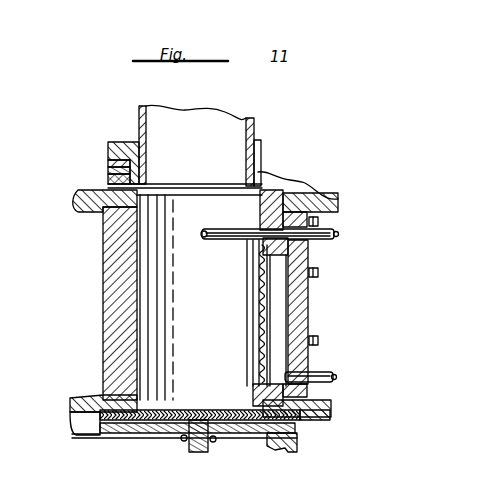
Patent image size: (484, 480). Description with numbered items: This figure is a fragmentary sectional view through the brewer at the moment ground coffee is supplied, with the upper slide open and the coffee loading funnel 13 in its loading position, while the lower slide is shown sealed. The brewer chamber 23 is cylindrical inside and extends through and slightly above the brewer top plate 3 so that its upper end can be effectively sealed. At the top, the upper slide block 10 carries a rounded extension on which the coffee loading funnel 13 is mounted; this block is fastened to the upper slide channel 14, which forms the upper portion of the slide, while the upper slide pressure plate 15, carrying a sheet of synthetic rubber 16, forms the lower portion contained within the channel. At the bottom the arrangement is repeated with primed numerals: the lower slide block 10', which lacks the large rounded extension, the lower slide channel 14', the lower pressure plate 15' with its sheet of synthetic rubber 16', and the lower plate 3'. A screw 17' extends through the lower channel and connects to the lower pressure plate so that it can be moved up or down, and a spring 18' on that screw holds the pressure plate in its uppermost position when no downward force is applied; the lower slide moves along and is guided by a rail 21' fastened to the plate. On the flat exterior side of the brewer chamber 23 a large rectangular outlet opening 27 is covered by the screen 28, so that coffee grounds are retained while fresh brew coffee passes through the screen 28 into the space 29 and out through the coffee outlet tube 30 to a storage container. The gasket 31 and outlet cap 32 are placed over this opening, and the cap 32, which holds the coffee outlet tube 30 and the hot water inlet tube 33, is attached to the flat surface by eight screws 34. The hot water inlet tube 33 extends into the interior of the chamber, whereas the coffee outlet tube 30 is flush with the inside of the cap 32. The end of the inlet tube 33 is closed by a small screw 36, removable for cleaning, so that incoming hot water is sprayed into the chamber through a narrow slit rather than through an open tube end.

The brewer top plate 3 is at (97, 208).
The brewer bottom plate 3' is at (75, 391).
The upper slide block 10 is at (122, 147).
The lower slide block 10' is at (304, 443).
The coffee loading funnel 13 is at (254, 135).
The upper slide channel 14 is at (95, 153).
The lower slide channel 14' is at (164, 432).
The upper slide pressure plate 15 is at (89, 171).
The lower slide pressure plate 15' is at (67, 417).
The sheet of synthetic rubber 16 is at (83, 186).
The sheet of synthetic rubber 16' is at (215, 401).
The screw 17' is at (179, 447).
The spring 18' is at (209, 454).
The rail 21' is at (184, 448).
The brewer chamber 23 is at (103, 314).
The outlet opening 27 is at (250, 342).
The screen 28 is at (262, 292).
The space 29 is at (280, 345).
The coffee outlet tube 30 is at (330, 372).
The gasket 31 is at (283, 252).
The outlet cap 32 is at (308, 304).
The hot water inlet tube 33 is at (338, 234).
The screws 34 is at (318, 222).
The small screw 36 is at (203, 238).